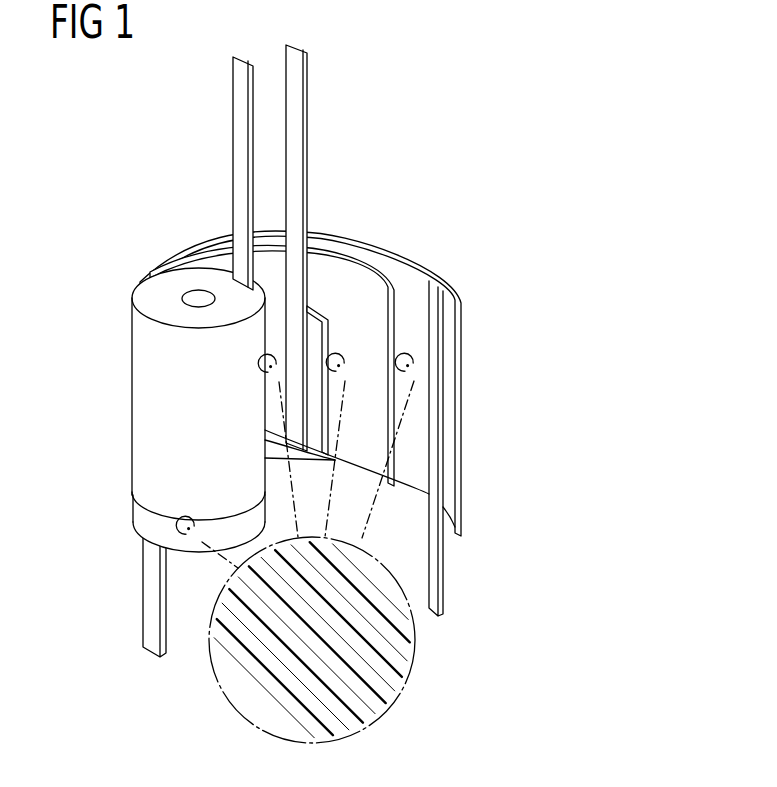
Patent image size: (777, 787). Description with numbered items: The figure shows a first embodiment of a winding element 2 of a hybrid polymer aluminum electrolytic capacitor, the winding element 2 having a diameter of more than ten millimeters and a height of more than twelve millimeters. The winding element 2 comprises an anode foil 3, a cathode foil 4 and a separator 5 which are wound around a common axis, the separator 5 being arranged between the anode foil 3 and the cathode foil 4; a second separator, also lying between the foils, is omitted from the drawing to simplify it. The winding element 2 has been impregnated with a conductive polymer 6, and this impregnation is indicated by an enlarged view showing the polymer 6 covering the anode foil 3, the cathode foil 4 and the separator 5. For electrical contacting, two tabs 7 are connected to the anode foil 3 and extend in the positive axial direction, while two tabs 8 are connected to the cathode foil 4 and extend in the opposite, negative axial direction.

The winding element 2 is at (92, 272).
The anode foil 3 is at (317, 300).
The cathode foil 4 is at (418, 272).
The separator 5 is at (368, 280).
The polymer 6 is at (407, 655).
The tabs 7 is at (242, 97).
The tabs 8 is at (150, 585).